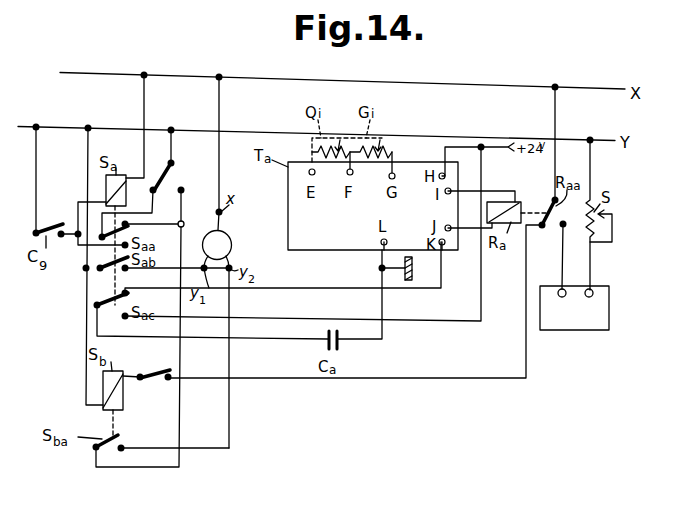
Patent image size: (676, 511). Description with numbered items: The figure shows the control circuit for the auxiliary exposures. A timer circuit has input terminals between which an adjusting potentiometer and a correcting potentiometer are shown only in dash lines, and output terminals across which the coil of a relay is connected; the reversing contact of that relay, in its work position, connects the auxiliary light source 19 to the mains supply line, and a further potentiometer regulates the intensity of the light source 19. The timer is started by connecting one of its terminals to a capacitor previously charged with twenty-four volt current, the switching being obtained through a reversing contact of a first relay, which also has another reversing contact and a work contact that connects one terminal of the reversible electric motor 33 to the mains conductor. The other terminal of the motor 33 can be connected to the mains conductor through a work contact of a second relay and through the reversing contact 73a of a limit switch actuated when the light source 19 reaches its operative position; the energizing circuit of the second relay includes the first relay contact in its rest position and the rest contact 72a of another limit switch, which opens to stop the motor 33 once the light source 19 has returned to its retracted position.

The reversing contact 73a is at (176, 172).
The reversible electric motor 33 is at (224, 242).
The rest contact 72a is at (155, 379).
The auxiliary light source 19 is at (561, 330).